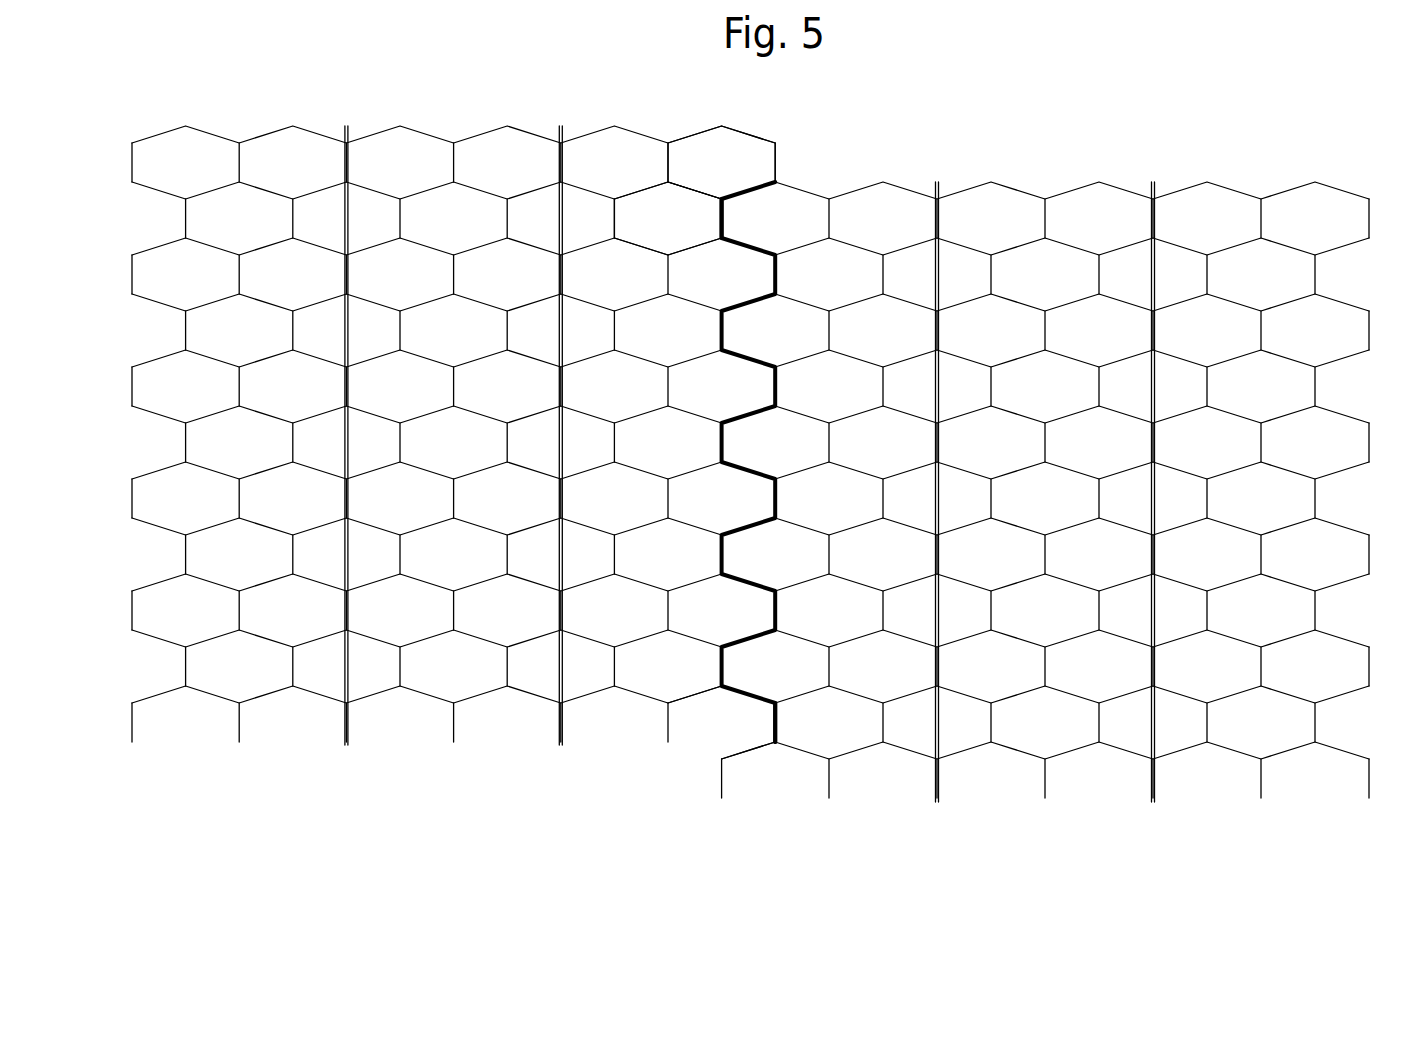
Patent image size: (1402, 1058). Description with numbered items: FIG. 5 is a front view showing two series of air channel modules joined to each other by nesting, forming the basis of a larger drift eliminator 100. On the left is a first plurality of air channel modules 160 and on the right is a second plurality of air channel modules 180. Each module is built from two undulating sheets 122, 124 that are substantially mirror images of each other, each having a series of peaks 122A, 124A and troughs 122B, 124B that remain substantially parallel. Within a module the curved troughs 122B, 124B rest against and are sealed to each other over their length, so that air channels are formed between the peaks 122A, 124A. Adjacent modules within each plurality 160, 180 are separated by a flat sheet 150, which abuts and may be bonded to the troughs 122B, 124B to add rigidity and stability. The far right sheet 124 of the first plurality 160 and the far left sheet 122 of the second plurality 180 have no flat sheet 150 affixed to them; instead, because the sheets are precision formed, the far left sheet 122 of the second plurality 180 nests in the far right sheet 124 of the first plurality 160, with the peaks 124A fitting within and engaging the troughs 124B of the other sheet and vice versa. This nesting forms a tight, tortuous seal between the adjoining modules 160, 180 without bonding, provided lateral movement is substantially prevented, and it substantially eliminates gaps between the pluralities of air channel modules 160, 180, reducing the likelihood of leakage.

The drift eliminator 100 is at (1041, 127).
The sheet 122 is at (721, 786).
The peak 122A is at (723, 218).
The trough 122B is at (777, 718).
The sheet 124 is at (778, 160).
The peak 124A is at (773, 722).
The trough 124B is at (720, 226).
The flat sheet 150 is at (562, 727).
The first plurality of air channel modules 160 is at (403, 765).
The second plurality of air channel modules 180 is at (995, 821).